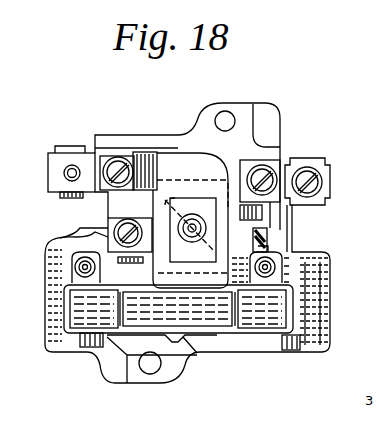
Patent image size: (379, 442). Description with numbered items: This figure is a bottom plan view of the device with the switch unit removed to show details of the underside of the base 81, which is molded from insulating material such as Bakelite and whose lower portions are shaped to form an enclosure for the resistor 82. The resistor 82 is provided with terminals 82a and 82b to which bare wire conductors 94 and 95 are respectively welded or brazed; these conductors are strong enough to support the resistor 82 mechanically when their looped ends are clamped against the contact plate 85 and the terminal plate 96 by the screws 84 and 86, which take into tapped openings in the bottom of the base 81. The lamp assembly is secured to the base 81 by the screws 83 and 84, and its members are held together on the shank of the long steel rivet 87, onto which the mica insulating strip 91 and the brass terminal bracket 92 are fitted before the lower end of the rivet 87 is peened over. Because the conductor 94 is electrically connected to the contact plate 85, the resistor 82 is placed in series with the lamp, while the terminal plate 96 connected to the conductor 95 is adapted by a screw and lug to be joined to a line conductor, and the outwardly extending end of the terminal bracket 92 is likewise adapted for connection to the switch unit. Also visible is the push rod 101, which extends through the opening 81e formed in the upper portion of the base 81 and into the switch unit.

The base 81 is at (131, 127).
The opening 81e is at (267, 233).
The resistor 82 is at (257, 318).
The terminal 82a is at (73, 266).
The terminal 82b is at (277, 270).
The screw 83 is at (110, 160).
The screw 84 is at (110, 232).
The contact plate 85 is at (108, 218).
The screw 86 is at (257, 170).
The rivet 87 is at (190, 225).
The mica insulating strip 91 is at (207, 186).
The terminal bracket 92 is at (157, 165).
The conductor 94 is at (72, 237).
The conductor 95 is at (268, 240).
The terminal plate 96 is at (292, 156).
The push rod 101 is at (270, 250).